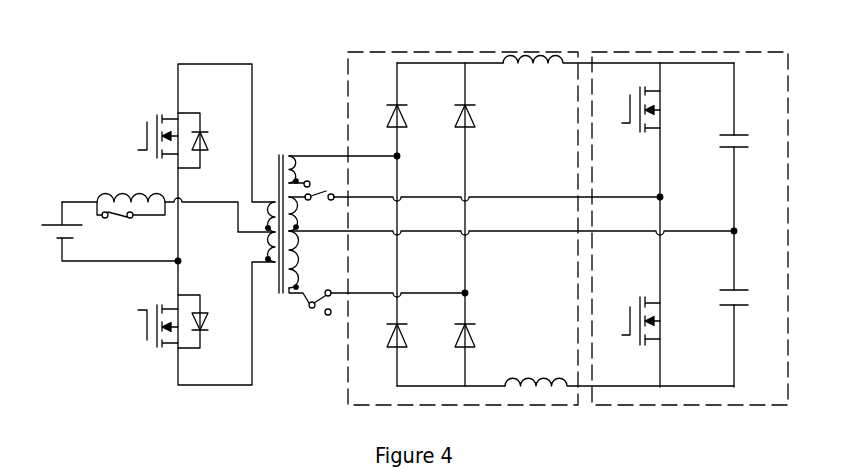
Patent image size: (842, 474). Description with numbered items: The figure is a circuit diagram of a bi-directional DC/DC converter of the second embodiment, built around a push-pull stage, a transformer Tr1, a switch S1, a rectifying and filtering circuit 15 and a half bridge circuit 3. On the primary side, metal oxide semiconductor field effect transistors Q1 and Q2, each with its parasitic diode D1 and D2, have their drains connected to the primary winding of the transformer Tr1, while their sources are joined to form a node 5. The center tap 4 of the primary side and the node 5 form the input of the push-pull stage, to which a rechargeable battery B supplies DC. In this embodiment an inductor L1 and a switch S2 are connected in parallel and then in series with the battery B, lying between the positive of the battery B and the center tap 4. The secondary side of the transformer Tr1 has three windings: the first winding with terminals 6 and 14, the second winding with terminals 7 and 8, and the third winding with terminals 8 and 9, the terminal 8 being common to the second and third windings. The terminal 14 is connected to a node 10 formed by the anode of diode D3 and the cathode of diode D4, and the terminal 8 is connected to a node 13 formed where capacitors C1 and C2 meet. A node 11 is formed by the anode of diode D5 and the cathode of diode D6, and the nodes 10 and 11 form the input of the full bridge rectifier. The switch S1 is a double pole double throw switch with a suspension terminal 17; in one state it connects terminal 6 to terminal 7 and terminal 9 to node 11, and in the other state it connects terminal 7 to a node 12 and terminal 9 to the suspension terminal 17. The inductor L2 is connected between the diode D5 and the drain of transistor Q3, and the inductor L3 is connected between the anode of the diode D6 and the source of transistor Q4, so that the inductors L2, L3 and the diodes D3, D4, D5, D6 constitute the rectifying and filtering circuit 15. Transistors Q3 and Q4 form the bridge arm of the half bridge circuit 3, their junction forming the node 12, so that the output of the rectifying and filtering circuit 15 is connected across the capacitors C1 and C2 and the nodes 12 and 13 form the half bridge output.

The half bridge circuit 3 is at (687, 52).
The center tap 4 is at (248, 233).
The node 5 is at (186, 261).
The terminal 6 is at (306, 178).
The terminal 7 is at (303, 210).
The terminal 8 is at (511, 233).
The terminal 9 is at (300, 285).
The node 10 is at (412, 158).
The node 11 is at (453, 282).
The node 12 is at (675, 198).
The node 13 is at (749, 235).
The terminal 14 is at (343, 156).
The rectifying and filtering circuit 15 is at (418, 52).
The suspension terminal 17 is at (327, 324).
The rechargeable battery B is at (106, 231).
The inductor L1 is at (168, 198).
The switch S2 is at (131, 225).
The metal oxide semiconductor field effect transistor Q1 is at (146, 136).
The parasitic diode D1 is at (210, 140).
The metal oxide semiconductor field effect transistor Q2 is at (145, 326).
The parasitic diode D2 is at (209, 321).
The transformer Tr1 is at (283, 236).
The switch S1 is at (325, 249).
The diode D3 is at (380, 117).
The diode D4 is at (384, 348).
The diode D5 is at (449, 117).
The diode D6 is at (452, 348).
The inductor L2 is at (618, 74).
The inductor L3 is at (619, 369).
The metal oxide semiconductor field effect transistor Q3 is at (629, 109).
The metal oxide semiconductor field effect transistor Q4 is at (629, 321).
The capacitor C1 is at (751, 143).
The capacitor C2 is at (751, 300).